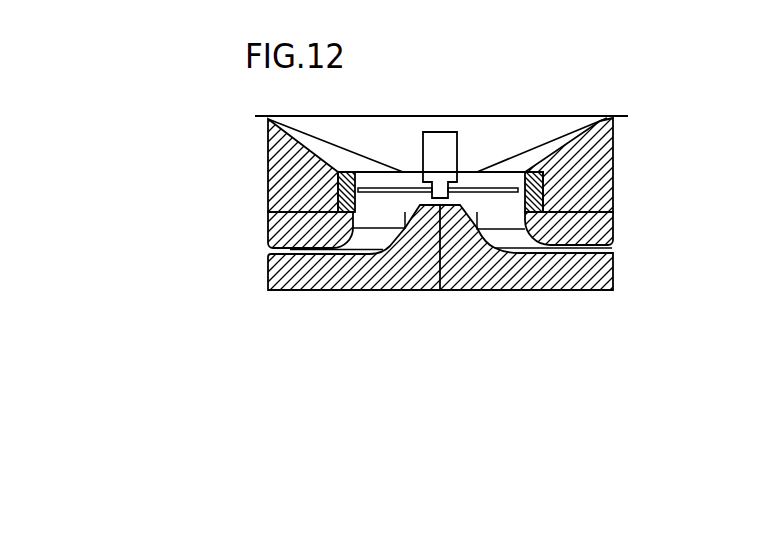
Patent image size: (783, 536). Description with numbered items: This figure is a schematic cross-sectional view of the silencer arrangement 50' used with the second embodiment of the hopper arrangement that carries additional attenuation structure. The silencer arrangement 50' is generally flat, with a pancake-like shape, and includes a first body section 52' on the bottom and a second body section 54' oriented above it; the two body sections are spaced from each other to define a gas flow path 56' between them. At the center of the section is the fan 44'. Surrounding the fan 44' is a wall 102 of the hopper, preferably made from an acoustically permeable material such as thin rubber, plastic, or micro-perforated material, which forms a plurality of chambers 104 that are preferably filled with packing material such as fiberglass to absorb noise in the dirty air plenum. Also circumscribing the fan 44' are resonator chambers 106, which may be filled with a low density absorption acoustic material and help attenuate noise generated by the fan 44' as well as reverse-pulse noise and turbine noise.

The fan 44' is at (438, 135).
The silencer arrangement 50' is at (500, 177).
The first body section 52' is at (436, 221).
The second body section 54' is at (436, 200).
The gas flow path 56' is at (411, 248).
The wall 102 is at (613, 145).
The chambers 104 is at (280, 158).
The resonator chambers 106 is at (340, 189).